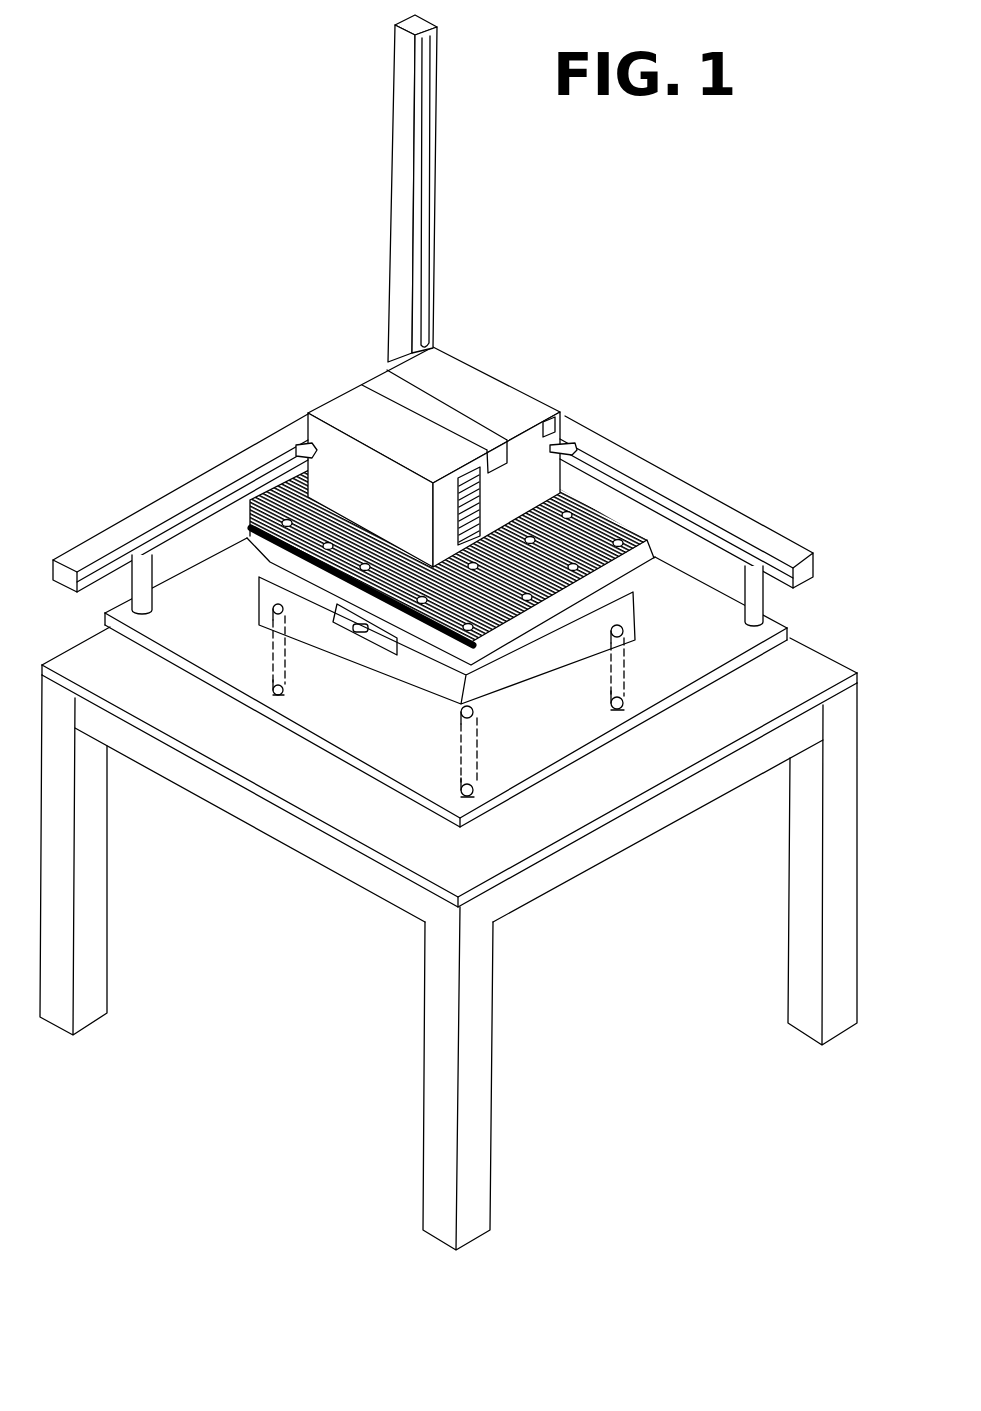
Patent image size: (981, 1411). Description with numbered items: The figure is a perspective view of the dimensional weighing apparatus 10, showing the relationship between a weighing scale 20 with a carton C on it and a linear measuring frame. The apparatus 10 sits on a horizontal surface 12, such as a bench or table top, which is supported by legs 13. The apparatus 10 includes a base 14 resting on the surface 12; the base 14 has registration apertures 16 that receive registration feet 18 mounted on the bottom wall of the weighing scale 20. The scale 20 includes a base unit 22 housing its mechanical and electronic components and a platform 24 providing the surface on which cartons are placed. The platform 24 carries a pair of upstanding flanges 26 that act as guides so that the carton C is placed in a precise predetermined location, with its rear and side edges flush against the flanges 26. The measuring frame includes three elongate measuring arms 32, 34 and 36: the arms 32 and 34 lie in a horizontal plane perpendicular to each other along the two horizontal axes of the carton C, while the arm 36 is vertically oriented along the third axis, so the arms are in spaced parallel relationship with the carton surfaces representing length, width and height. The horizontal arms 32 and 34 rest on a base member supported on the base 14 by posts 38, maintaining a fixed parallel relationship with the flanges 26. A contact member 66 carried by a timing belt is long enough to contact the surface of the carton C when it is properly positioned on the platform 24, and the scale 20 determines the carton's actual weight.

The dimensional weighing apparatus 10 is at (312, 368).
The surface 12 is at (352, 822).
The legs 13 is at (440, 1022).
The base 14 is at (678, 665).
The registration apertures 16 is at (483, 785).
The registration feet 18 is at (490, 720).
The weighing scale 20 is at (243, 634).
The base unit 22 is at (390, 675).
The platform 24 is at (450, 654).
The upstanding flanges 26 is at (255, 517).
The measuring arm 32 is at (627, 452).
The measuring arm 34 is at (230, 460).
The measuring arm 36 is at (433, 192).
The posts 38 is at (765, 598).
The contact member 66 is at (423, 350).
The carton C is at (503, 376).